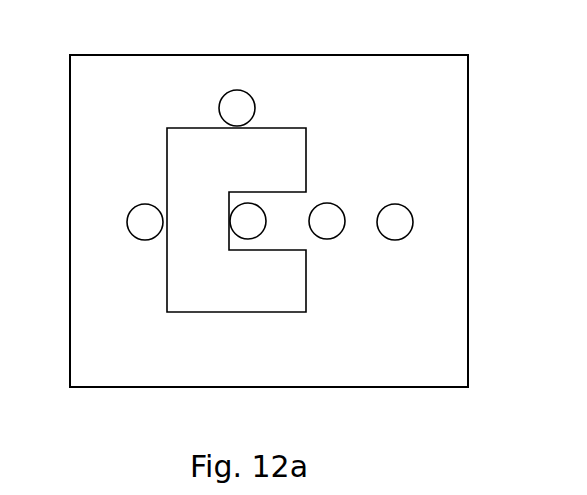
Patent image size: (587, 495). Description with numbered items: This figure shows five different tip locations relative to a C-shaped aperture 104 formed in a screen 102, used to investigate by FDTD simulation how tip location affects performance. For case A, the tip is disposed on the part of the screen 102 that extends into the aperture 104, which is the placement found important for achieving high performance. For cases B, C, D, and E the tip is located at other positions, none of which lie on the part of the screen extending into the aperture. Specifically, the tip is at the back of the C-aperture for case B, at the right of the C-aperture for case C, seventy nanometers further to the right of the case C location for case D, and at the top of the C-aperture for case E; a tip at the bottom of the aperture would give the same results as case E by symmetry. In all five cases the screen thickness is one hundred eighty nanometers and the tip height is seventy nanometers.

The screen 102 is at (444, 87).
The C-shaped aperture 104 is at (288, 143).
The tip location case E is at (230, 106).
The tip location case B is at (138, 225).
The tip location case A is at (247, 225).
The tip location case C is at (328, 229).
The tip location case D is at (398, 220).